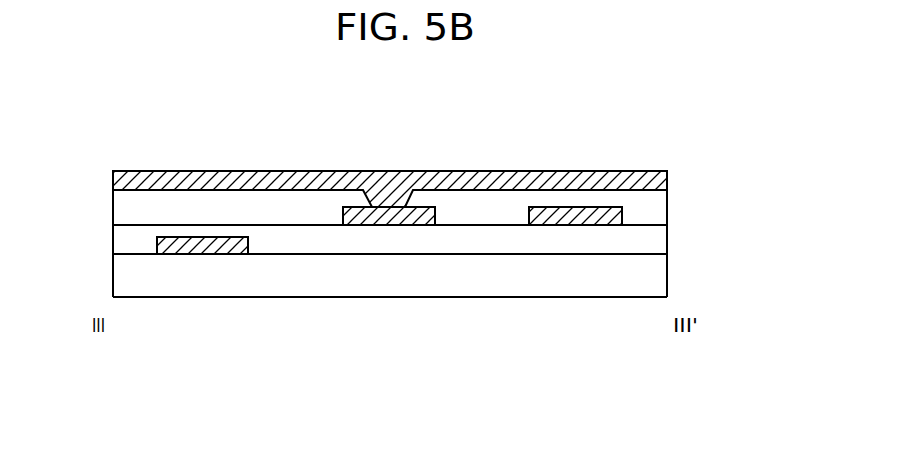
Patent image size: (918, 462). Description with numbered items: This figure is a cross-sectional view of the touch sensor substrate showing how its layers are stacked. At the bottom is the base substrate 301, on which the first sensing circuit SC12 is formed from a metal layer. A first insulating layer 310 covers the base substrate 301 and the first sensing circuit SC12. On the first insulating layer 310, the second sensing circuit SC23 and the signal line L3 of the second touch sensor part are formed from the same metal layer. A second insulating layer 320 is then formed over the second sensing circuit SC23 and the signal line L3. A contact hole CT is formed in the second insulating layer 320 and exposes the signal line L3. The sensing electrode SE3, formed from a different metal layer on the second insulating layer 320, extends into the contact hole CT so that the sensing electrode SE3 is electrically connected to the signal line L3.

The second insulating layer 320 is at (667, 205).
The first insulating layer 310 is at (667, 238).
The base substrate 301 is at (667, 270).
The sensing electrode SE3 is at (521, 171).
The contact hole CT is at (389, 203).
The first sensing circuit SC12 is at (200, 246).
The second sensing circuit SC23 is at (576, 216).
The signal line L3 is at (387, 256).